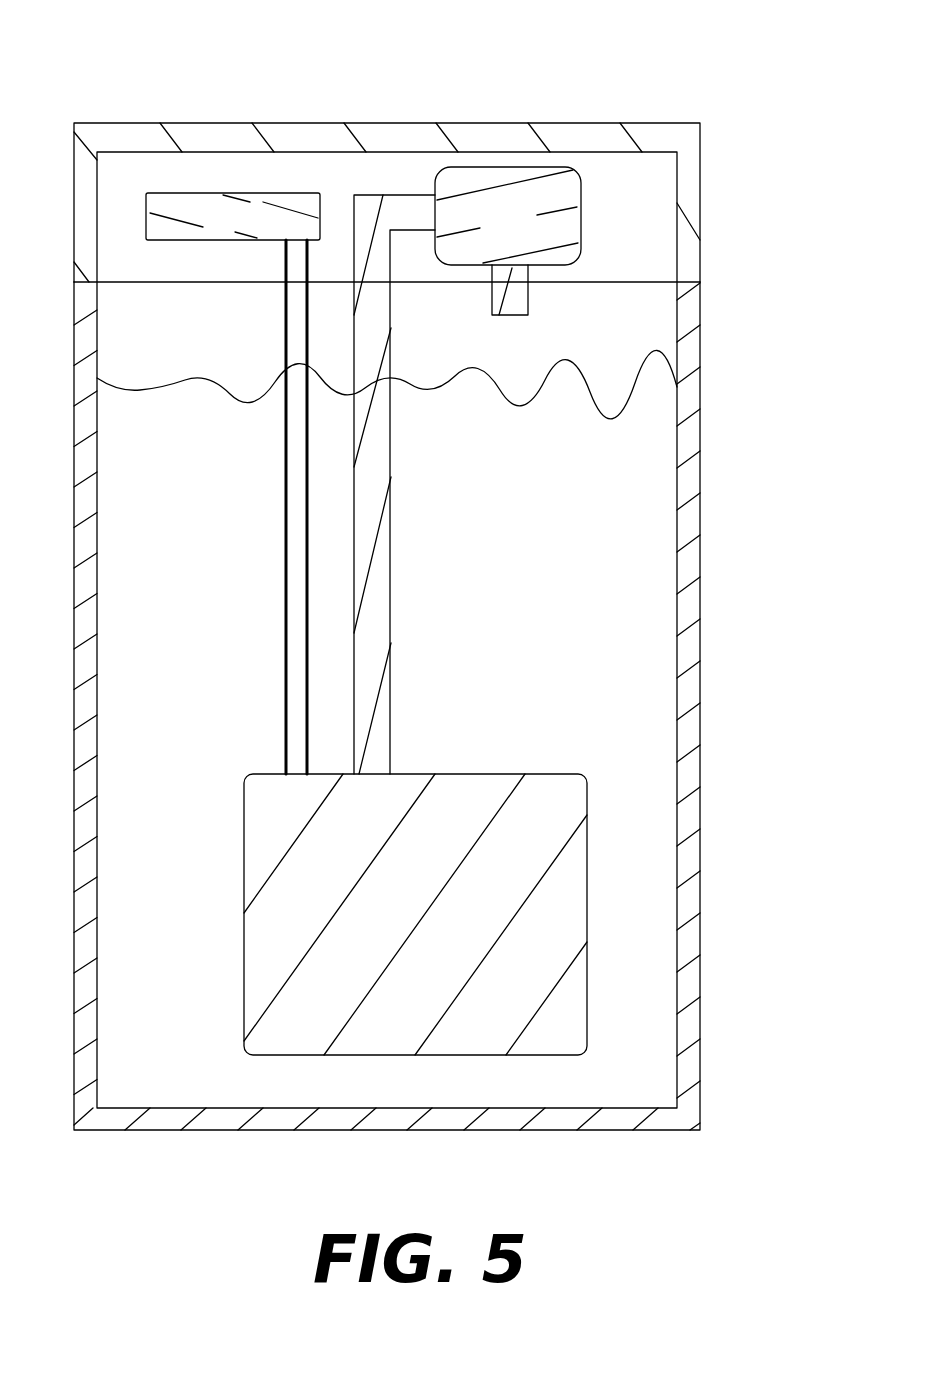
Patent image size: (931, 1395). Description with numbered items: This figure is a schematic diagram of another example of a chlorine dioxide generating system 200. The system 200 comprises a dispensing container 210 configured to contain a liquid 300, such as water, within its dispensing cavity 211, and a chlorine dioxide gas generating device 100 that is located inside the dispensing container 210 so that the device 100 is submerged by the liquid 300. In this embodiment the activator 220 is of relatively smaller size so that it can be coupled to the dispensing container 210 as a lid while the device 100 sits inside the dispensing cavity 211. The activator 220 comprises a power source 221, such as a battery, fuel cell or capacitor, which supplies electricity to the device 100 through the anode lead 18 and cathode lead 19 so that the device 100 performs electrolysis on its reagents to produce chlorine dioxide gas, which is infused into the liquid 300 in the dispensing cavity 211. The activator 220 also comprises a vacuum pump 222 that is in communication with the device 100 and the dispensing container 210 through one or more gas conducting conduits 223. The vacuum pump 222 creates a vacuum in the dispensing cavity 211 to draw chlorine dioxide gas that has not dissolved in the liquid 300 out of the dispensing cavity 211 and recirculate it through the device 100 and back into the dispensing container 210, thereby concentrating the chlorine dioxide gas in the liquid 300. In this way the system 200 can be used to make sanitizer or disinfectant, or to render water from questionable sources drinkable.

The chlorine dioxide generating system 200 is at (610, 70).
The activator 220 is at (685, 203).
The dispensing container 210 is at (688, 477).
The dispensing cavity 211 is at (642, 341).
The liquid 300 is at (526, 575).
The power source 221 is at (208, 230).
The vacuum pump 222 is at (484, 226).
The gas conducting conduit 223 is at (370, 480).
The anode lead 18 is at (287, 497).
The cathode lead 19 is at (285, 600).
The chlorine dioxide gas generating device 100 is at (388, 930).